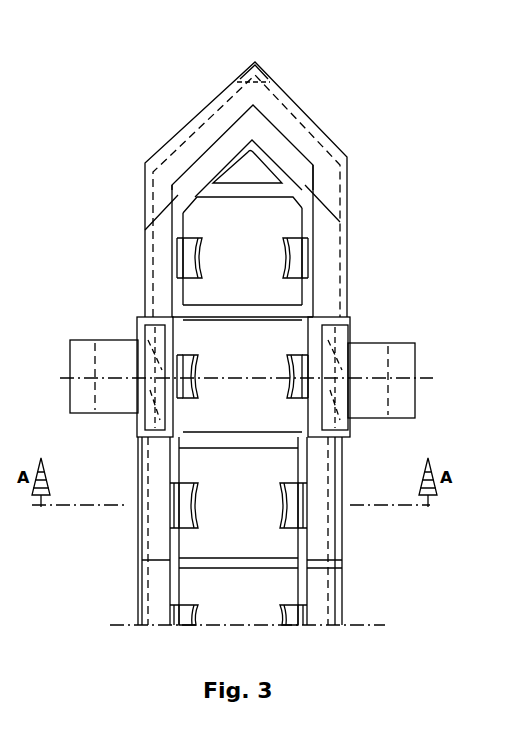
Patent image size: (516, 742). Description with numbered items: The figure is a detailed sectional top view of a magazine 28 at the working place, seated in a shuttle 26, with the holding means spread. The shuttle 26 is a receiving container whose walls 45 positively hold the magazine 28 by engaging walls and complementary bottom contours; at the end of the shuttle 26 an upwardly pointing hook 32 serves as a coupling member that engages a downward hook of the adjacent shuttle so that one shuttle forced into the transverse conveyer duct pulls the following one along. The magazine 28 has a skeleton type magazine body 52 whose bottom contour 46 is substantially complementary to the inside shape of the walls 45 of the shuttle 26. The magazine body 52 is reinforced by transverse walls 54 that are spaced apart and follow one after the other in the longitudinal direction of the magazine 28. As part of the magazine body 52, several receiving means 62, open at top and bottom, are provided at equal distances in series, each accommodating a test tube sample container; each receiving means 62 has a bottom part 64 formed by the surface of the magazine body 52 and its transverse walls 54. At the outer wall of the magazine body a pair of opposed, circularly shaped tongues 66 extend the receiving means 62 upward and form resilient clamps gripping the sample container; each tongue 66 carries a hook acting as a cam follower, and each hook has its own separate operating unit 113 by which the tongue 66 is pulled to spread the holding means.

The shuttle 26 is at (212, 122).
The upwardly pointing hook 32 is at (247, 72).
The bottom contour 46 is at (257, 133).
The wall 45 is at (290, 147).
The magazine 28 is at (285, 192).
The tongue 66 is at (190, 250).
The operating unit 113 is at (162, 297).
The transverse wall 54 is at (132, 313).
The skeleton type magazine body 52 is at (305, 315).
The receiving means 62 is at (262, 475).
The bottom part 64 is at (207, 540).